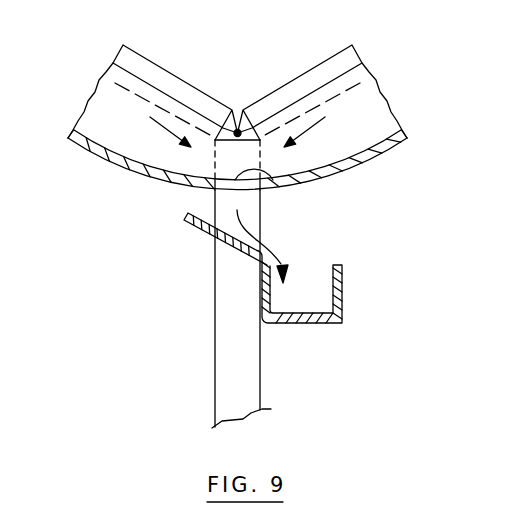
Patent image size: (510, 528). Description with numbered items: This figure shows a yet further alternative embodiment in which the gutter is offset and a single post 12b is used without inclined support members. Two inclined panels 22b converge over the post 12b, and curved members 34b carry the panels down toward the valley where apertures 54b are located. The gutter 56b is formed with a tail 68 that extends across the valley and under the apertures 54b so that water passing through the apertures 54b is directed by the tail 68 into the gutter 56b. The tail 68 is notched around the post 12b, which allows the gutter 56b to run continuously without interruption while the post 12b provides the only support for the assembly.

The panels 22b is at (273, 92).
The curved members 34b is at (93, 155).
The apertures 54b is at (275, 187).
The post 12b is at (260, 378).
The tail 68 is at (200, 226).
The gutter 56b is at (342, 290).